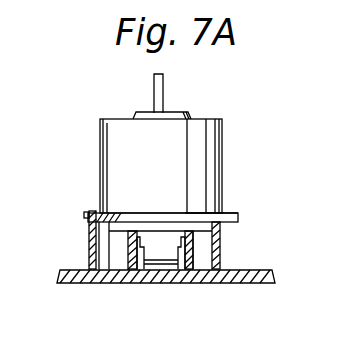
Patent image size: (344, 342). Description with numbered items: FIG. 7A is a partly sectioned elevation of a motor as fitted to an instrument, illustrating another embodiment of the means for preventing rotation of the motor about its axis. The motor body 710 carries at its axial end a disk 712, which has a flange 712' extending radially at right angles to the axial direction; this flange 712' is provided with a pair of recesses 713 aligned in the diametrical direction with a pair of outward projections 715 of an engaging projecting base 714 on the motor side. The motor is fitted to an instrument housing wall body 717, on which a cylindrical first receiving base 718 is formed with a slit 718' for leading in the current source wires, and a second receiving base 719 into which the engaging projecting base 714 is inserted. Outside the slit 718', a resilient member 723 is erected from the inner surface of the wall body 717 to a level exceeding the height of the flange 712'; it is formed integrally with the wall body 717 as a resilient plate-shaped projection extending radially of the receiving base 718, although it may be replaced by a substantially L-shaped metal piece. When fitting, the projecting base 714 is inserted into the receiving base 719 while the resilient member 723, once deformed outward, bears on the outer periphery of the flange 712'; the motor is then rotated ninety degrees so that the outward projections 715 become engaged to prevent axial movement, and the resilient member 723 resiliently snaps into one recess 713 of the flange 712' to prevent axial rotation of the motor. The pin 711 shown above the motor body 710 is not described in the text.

The motor body 710 is at (222, 131).
The output shaft 711 is at (163, 85).
The disk 712 is at (87, 193).
The flange 712' is at (223, 188).
The recesses 713 is at (88, 213).
The engaging projecting base 714 is at (160, 258).
The outward projections 715 is at (138, 260).
The instrument housing wall body 717 is at (273, 270).
The first receiving base 718 is at (187, 245).
The slit 718' is at (63, 240).
The second receiving base 719 is at (203, 258).
The resilient member 723 is at (88, 231).